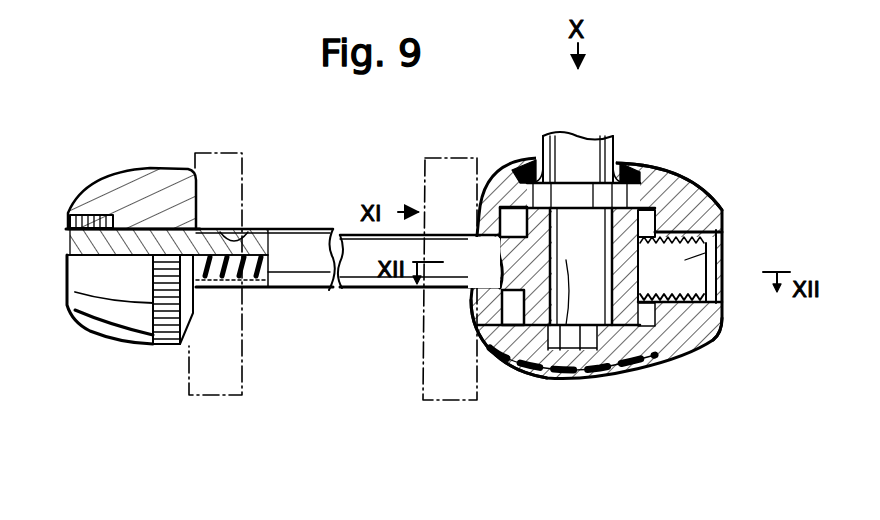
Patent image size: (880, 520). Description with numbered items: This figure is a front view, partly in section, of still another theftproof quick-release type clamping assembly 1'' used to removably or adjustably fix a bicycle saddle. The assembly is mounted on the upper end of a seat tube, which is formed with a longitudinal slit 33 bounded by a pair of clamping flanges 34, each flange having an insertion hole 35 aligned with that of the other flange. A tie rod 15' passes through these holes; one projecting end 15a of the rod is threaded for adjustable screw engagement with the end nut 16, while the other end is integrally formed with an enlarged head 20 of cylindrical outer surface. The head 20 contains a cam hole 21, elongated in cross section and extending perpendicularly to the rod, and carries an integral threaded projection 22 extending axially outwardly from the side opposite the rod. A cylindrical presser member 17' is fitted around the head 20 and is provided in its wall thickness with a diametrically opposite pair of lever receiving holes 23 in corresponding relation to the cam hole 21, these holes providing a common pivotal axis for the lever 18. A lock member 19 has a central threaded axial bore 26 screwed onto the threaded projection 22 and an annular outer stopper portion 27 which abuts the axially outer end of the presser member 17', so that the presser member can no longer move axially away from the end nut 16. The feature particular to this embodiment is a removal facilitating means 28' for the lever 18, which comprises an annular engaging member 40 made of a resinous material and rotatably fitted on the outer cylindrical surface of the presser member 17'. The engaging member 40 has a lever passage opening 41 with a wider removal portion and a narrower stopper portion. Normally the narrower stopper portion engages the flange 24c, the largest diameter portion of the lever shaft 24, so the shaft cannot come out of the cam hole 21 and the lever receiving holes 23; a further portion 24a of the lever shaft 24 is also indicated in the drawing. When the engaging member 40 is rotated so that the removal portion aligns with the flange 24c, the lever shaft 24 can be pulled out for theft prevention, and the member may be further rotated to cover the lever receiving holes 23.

The theftproof quick-release type clamping assembly 1'' is at (111, 207).
The projecting end of the tie rod 15a is at (143, 224).
The tie rod 15' is at (201, 259).
The end nut 16 is at (167, 180).
The presser member 17' is at (496, 379).
The lever 18 is at (565, 192).
The lock member 19 is at (723, 208).
The enlarged head 20 is at (590, 215).
The cam hole 21 is at (530, 360).
The threaded projection 22 is at (600, 296).
The lever receiving holes 23 is at (558, 186).
The lever shaft 24 is at (577, 195).
The housing bottom wall 24a is at (670, 357).
The lever shaft flange 24c is at (613, 156).
The threaded axial bore 26 is at (690, 206).
The annular outer stopper portion 27 is at (637, 362).
The removal facilitating means 28' is at (572, 359).
The longitudinal slit 33 is at (372, 160).
The clamping flanges 34 is at (230, 365).
The insertion hole 35 is at (257, 228).
The annular engaging member 40 is at (572, 359).
The lever passage opening 41 is at (538, 162).